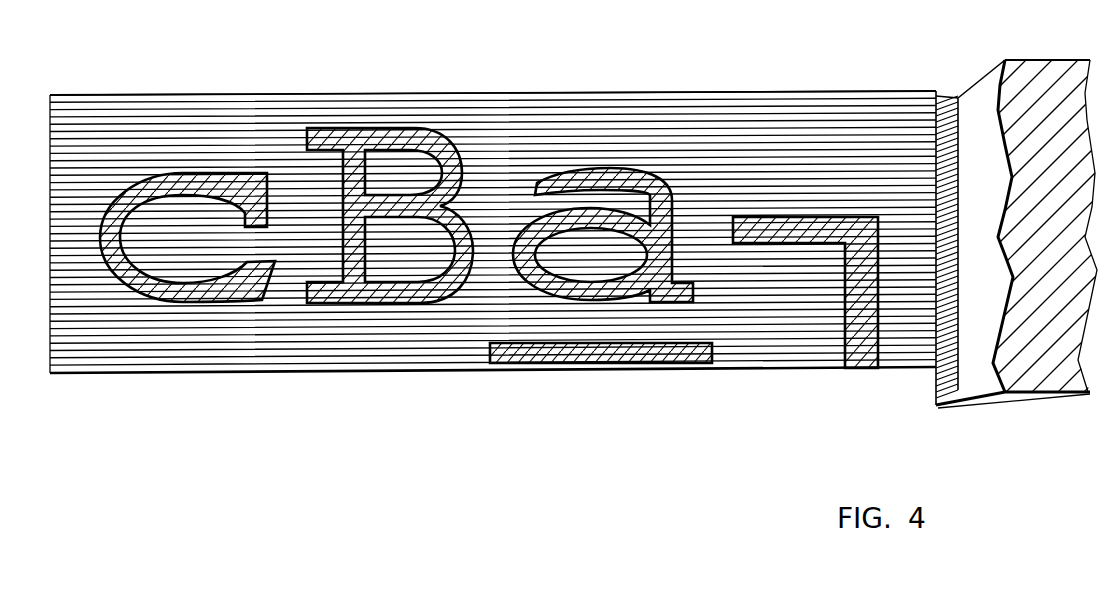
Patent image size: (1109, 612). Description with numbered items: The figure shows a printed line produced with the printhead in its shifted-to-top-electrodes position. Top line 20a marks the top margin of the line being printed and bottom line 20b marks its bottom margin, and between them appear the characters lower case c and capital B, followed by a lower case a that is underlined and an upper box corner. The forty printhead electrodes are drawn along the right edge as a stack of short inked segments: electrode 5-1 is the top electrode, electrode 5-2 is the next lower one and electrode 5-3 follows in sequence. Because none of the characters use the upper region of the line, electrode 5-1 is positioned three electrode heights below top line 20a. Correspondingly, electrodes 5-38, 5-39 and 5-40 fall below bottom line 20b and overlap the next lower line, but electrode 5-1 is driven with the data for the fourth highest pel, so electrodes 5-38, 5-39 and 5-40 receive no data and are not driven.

The top line 20a is at (636, 92).
The bottom line 20b is at (752, 370).
The top electrode 5-1 is at (950, 110).
The electrode 5-2 is at (935, 110).
The electrode 5-3 is at (937, 125).
The electrode 5-38 is at (875, 368).
The electrode 5-39 is at (940, 373).
The electrode 5-40 is at (938, 392).